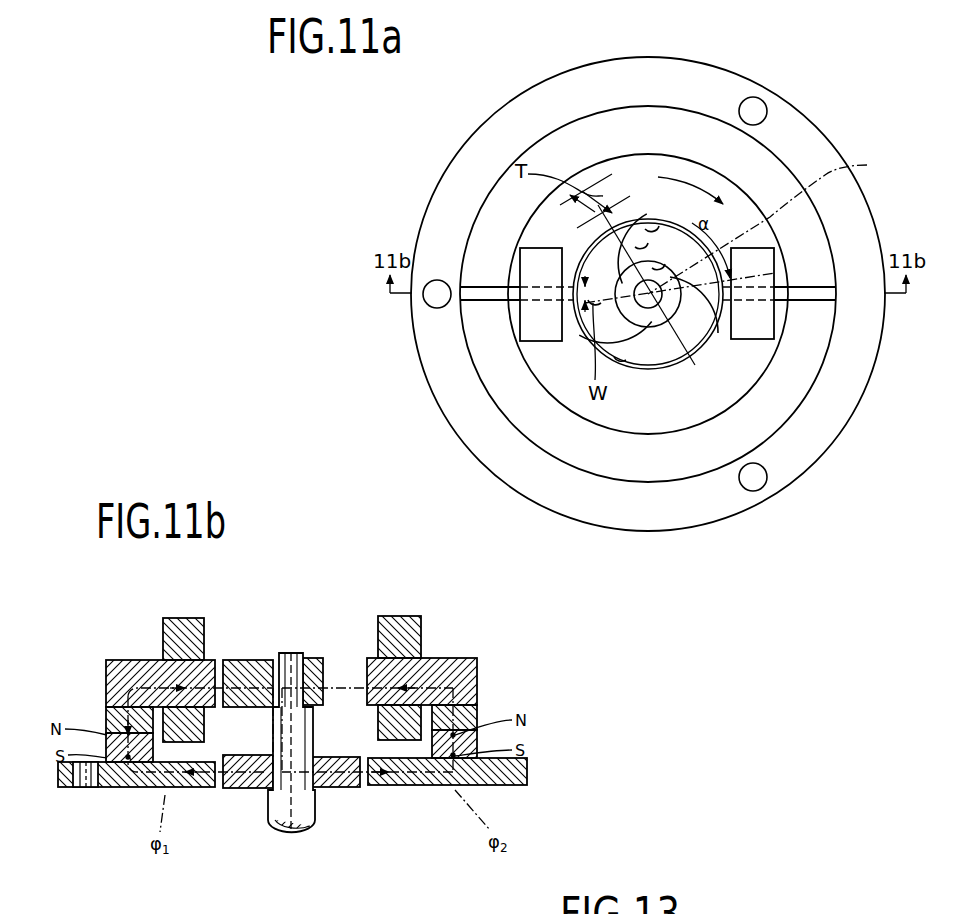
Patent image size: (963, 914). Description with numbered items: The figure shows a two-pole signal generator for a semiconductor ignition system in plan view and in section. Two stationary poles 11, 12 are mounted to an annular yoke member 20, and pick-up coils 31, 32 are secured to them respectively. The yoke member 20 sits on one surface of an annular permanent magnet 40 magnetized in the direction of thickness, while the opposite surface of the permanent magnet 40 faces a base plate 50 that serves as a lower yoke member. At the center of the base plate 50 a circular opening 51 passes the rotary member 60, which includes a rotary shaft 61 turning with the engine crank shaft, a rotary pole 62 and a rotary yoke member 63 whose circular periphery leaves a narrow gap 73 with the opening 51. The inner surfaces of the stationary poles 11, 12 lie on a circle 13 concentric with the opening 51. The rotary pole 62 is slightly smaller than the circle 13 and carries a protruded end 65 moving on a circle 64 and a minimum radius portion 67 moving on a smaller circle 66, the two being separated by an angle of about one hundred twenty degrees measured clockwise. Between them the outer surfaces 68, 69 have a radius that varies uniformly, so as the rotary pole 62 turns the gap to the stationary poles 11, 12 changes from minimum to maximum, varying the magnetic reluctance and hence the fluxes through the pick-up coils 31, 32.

In FIG. 11A, the stationary pole 11 is at (486, 298).
In FIG. 11B, the stationary pole 11 is at (128, 672).
In FIG. 11A, the stationary pole 12 is at (805, 294).
In FIG. 11B, the stationary pole 12 is at (455, 668).
In FIG. 11A, the circle 13 is at (627, 362).
In FIG. 11A, the annular yoke member 20 is at (497, 214).
In FIG. 11B, the annular yoke member 20 is at (112, 718).
In FIG. 11A, the pick-up coil 31 is at (531, 268).
In FIG. 11B, the pick-up coil 31 is at (175, 625).
In FIG. 11A, the pick-up coil 32 is at (748, 318).
In FIG. 11B, the pick-up coil 32 is at (387, 622).
In FIG. 11B, the annular permanent magnet 40 is at (106, 745).
In FIG. 11A, the base plate 50 is at (467, 422).
In FIG. 11B, the base plate 50 is at (118, 789).
In FIG. 11B, the circular opening 51 is at (218, 789).
In FIG. 11B, the rotary member 60 is at (396, 575).
In FIG. 11B, the rotary shaft 61 is at (318, 828).
In FIG. 11B, the rotary pole 62 is at (246, 665).
In FIG. 11B, the rotary yoke member 63 is at (344, 788).
In FIG. 11A, the circle 64 is at (647, 244).
In FIG. 11A, the protruded end 65 is at (618, 231).
In FIG. 11A, the circle 66 is at (740, 227).
In FIG. 11A, the minimum radius portion 67 is at (713, 318).
In FIG. 11A, the outer surface 68 is at (647, 249).
In FIG. 11A, the outer surface 69 is at (640, 345).
In FIG. 11B, the narrow gap 73 is at (364, 783).